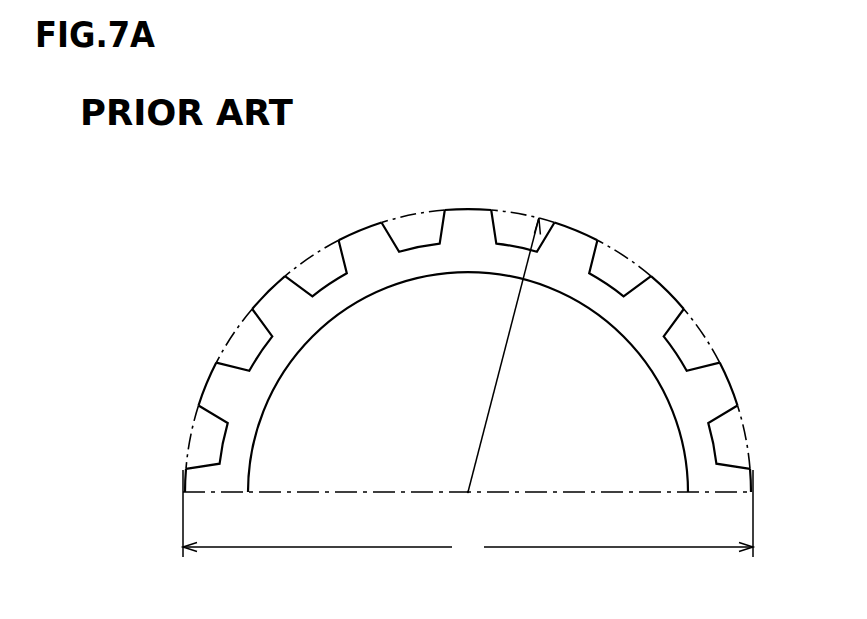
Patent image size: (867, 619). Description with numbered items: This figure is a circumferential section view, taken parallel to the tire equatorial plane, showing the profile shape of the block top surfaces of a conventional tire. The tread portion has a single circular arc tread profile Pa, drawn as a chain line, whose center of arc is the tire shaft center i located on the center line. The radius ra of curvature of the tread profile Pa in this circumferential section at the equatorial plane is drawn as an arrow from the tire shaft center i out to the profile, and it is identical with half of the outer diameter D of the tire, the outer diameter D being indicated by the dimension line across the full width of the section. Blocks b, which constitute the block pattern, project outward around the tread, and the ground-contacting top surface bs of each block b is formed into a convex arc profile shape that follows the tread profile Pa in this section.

The block b is at (600, 257).
The ground-contacting top surface bs is at (578, 230).
The tread profile Pa is at (405, 216).
The radius of curvature ra is at (488, 421).
The tire shaft center i is at (468, 492).
The outer diameter D is at (468, 516).